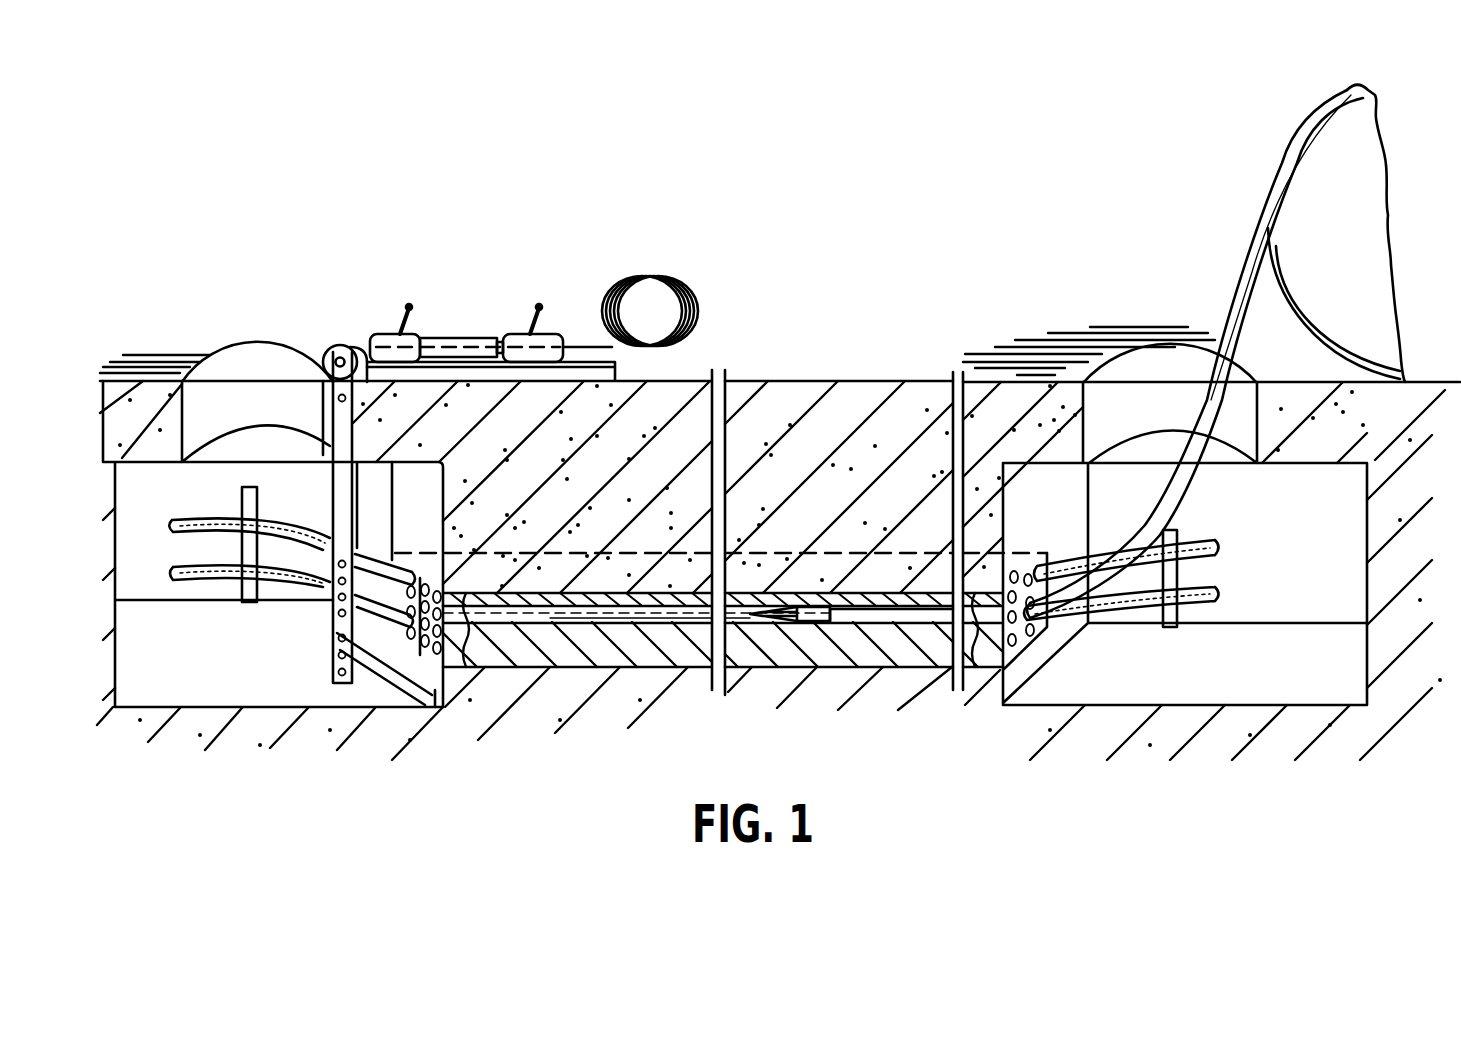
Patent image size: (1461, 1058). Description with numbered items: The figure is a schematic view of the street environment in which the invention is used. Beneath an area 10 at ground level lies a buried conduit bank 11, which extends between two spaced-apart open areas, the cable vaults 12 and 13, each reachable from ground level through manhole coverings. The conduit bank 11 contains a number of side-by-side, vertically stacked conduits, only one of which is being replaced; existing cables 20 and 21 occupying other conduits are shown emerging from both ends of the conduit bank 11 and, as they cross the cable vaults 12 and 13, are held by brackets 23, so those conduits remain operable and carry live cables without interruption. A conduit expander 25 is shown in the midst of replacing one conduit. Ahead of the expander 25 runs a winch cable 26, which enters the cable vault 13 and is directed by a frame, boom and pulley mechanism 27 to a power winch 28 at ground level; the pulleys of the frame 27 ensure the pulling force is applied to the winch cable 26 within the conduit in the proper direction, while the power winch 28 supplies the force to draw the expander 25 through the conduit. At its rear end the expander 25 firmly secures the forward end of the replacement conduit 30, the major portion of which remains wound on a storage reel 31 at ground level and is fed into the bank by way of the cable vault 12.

The area at ground level 10 is at (858, 385).
The conduit bank 11 is at (851, 590).
The cable vault 12 is at (1158, 386).
The cable vault 13 is at (259, 392).
The existing cable 20 is at (187, 520).
The existing cable 21 is at (192, 583).
The bracket 23 is at (242, 500).
The conduit expander 25 is at (772, 624).
The winch cable 26 is at (362, 340).
The frame, boom and pulley mechanism 27 is at (345, 413).
The power winch 28 is at (477, 334).
The replacement conduit 30 is at (1285, 133).
The storage reel 31 is at (1340, 211).